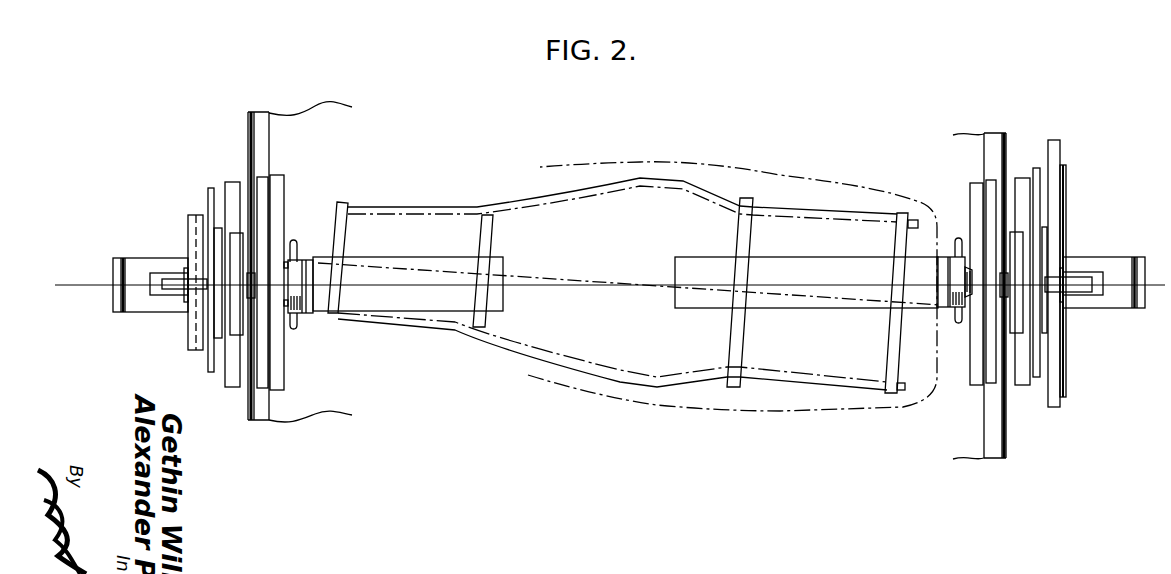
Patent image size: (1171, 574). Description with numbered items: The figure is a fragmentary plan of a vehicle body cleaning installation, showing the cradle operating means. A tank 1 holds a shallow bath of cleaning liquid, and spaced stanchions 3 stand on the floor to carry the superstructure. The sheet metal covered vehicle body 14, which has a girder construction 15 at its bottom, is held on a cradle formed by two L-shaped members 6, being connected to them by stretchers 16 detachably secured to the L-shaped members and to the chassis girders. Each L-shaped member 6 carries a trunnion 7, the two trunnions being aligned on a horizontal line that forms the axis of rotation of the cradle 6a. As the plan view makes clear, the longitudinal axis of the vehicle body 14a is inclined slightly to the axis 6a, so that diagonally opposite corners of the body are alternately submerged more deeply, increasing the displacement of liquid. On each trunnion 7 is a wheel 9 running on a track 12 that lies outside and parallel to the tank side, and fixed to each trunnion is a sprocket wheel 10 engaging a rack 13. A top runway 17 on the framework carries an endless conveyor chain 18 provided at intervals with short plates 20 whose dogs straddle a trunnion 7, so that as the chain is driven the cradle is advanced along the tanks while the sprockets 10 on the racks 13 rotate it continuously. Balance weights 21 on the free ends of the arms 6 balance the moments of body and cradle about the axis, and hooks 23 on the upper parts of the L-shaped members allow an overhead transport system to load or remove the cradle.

The tank 1 is at (1005, 437).
The stanchion 3 is at (145, 283).
The L-shaped member 6 is at (382, 302).
The axis of rotation of the cradle 6a is at (590, 288).
The trunnion 7 is at (173, 282).
The wheel 9 is at (235, 330).
The sprocket wheel 10 is at (213, 333).
The track 12 is at (233, 192).
The rack 13 is at (218, 363).
The vehicle body 14 is at (820, 411).
The longitudinal axis of the vehicle body 14a is at (567, 273).
The girder construction 15 is at (582, 374).
The stretcher 16 is at (485, 212).
The top runway 17 is at (197, 240).
The conveyor chain 18 is at (190, 232).
The plate 20 is at (190, 300).
The balance weight 21 is at (306, 310).
The hook 23 is at (293, 242).